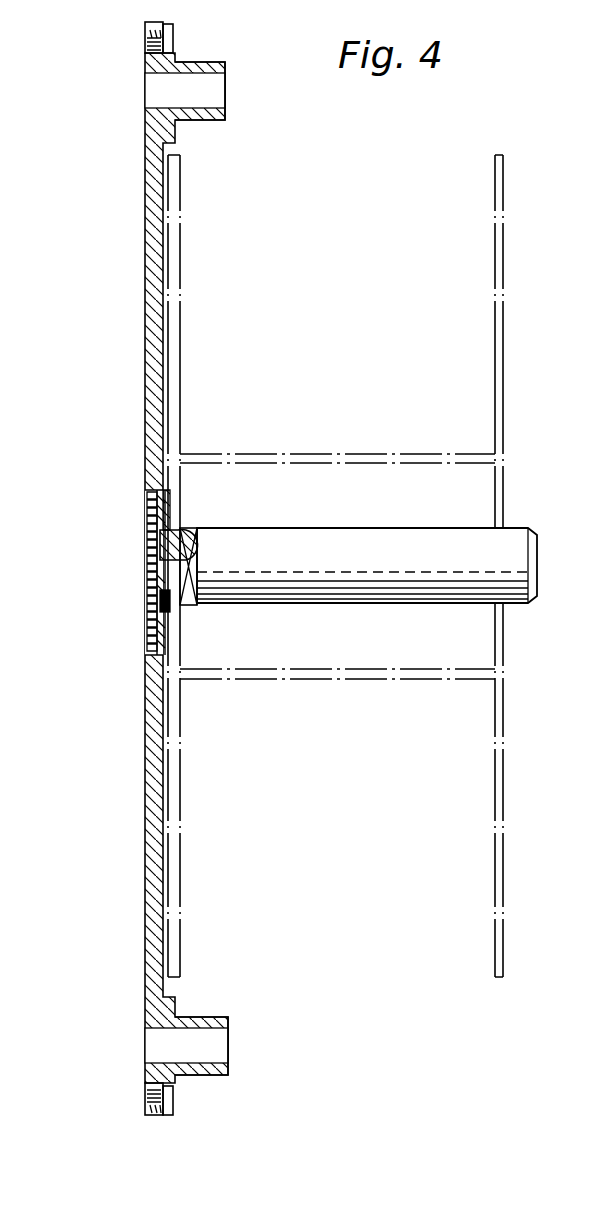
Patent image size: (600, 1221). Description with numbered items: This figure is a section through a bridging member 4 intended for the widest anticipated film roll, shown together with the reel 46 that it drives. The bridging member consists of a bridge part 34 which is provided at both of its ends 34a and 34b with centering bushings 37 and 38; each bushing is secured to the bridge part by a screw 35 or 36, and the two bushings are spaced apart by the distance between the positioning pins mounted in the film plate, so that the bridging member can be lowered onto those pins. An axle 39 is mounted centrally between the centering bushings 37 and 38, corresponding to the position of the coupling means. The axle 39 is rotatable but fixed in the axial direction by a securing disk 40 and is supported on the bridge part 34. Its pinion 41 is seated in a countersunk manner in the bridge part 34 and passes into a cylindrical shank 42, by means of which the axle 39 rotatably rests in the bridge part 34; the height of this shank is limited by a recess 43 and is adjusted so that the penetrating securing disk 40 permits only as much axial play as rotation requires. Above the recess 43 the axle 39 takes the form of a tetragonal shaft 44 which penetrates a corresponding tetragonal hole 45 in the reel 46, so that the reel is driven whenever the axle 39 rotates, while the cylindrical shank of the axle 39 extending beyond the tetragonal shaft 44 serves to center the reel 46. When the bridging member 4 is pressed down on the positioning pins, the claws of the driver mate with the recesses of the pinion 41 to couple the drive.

The bridging member 4 is at (121, 401).
The bridge part 34 is at (150, 262).
The end of bridge part 34a is at (147, 30).
The end of bridge part 34b is at (147, 1108).
The screw 35 is at (170, 36).
The screw 36 is at (175, 1105).
The centering bushing 37 is at (205, 105).
The centering bushing 38 is at (205, 1025).
The axle 39 is at (410, 590).
The securing disk 40 is at (165, 625).
The pinion 41 is at (150, 618).
The cylindrical shank 42 is at (150, 576).
The recess 43 is at (158, 545).
The tetragonal shaft 44 is at (188, 600).
The tetragonal hole 45 is at (175, 525).
The reel 46 is at (497, 918).